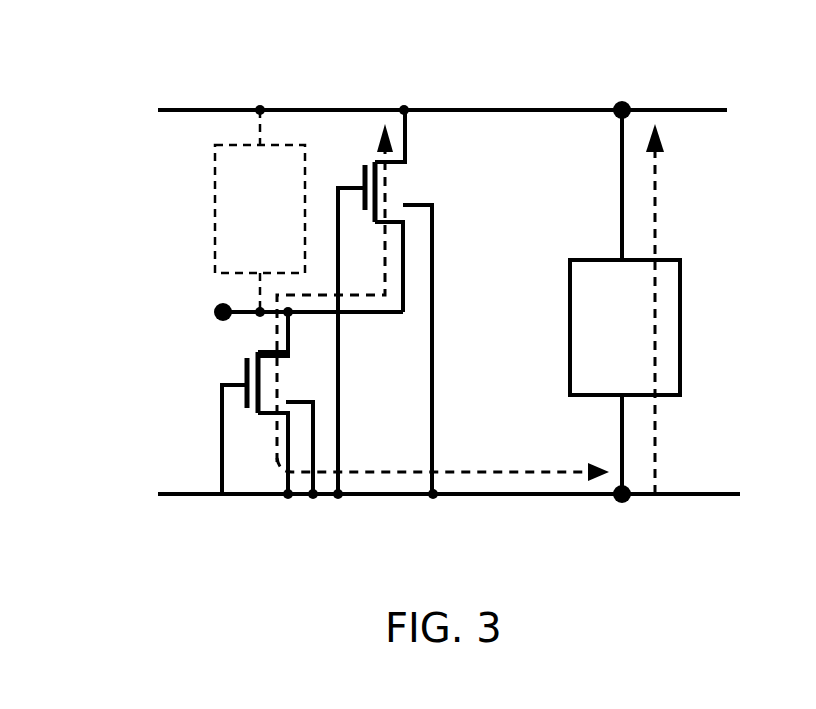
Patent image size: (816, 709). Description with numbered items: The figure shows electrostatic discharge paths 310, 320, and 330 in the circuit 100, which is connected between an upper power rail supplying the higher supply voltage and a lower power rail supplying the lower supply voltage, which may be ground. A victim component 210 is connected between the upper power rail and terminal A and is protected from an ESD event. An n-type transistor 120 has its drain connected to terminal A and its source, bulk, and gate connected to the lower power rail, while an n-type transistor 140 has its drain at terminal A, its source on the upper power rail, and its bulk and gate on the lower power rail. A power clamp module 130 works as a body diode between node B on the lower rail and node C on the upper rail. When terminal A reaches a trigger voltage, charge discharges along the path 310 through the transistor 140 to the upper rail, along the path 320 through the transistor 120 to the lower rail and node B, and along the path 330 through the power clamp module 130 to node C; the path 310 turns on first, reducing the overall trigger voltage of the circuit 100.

The circuit 100 is at (80, 42).
The transistor 120 is at (238, 362).
The power clamp module 130 is at (625, 302).
The transistor 140 is at (372, 152).
The component 210 is at (260, 211).
The path 310 is at (386, 272).
The path 320 is at (362, 476).
The path 330 is at (656, 221).